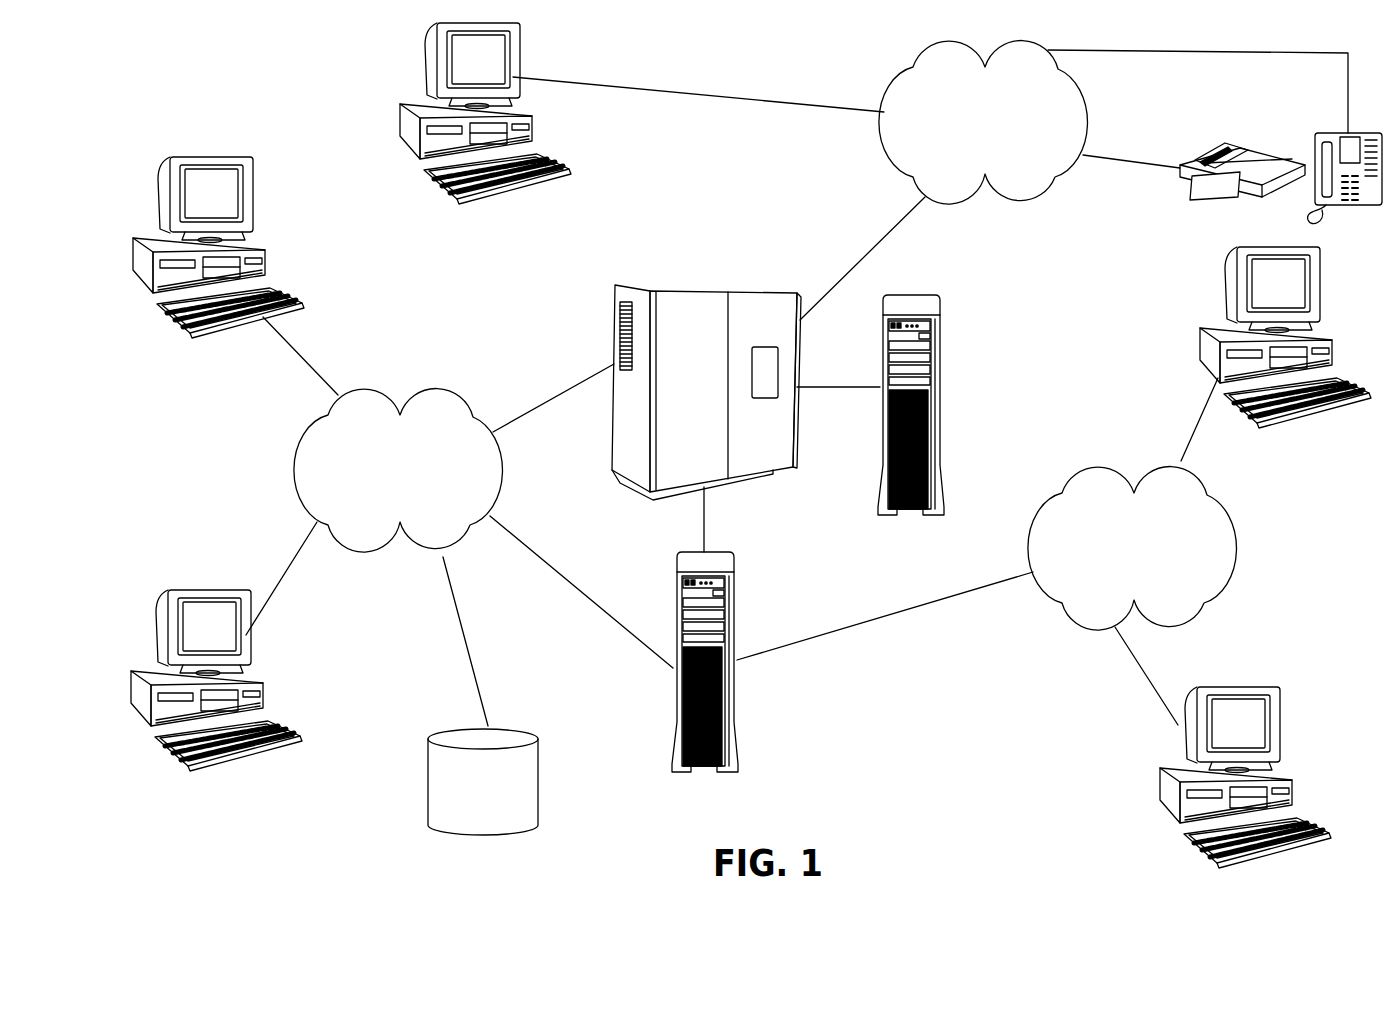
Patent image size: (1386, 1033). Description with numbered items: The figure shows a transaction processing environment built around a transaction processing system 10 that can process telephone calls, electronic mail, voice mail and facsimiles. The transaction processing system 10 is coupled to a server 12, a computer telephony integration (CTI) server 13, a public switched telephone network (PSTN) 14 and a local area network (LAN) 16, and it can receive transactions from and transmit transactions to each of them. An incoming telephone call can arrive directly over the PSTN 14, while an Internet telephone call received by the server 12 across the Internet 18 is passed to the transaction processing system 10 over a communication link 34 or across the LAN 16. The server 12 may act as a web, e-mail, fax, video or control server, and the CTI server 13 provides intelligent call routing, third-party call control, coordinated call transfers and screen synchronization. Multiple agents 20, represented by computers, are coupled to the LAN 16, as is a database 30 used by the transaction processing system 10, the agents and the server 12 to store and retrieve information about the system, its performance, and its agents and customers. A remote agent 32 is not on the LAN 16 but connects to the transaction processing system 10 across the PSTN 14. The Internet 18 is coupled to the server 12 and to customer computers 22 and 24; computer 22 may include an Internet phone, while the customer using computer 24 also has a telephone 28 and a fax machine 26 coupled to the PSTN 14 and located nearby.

The transaction processing system 10 is at (613, 338).
The server 12 is at (673, 707).
The computer telephony integration (CTI) server 13 is at (943, 398).
The public switched telephone network (PSTN) 14 is at (1083, 98).
The local area network (LAN) 16 is at (298, 457).
The Internet 18 is at (1232, 547).
The agents 20 is at (248, 156).
The customer computer 22 is at (1157, 790).
The customer computer 24 is at (1208, 343).
The fax machine 26 is at (1223, 140).
The telephone 28 is at (1333, 135).
The database 30 is at (427, 778).
The agent 32 is at (397, 115).
The communication link 34 is at (702, 533).